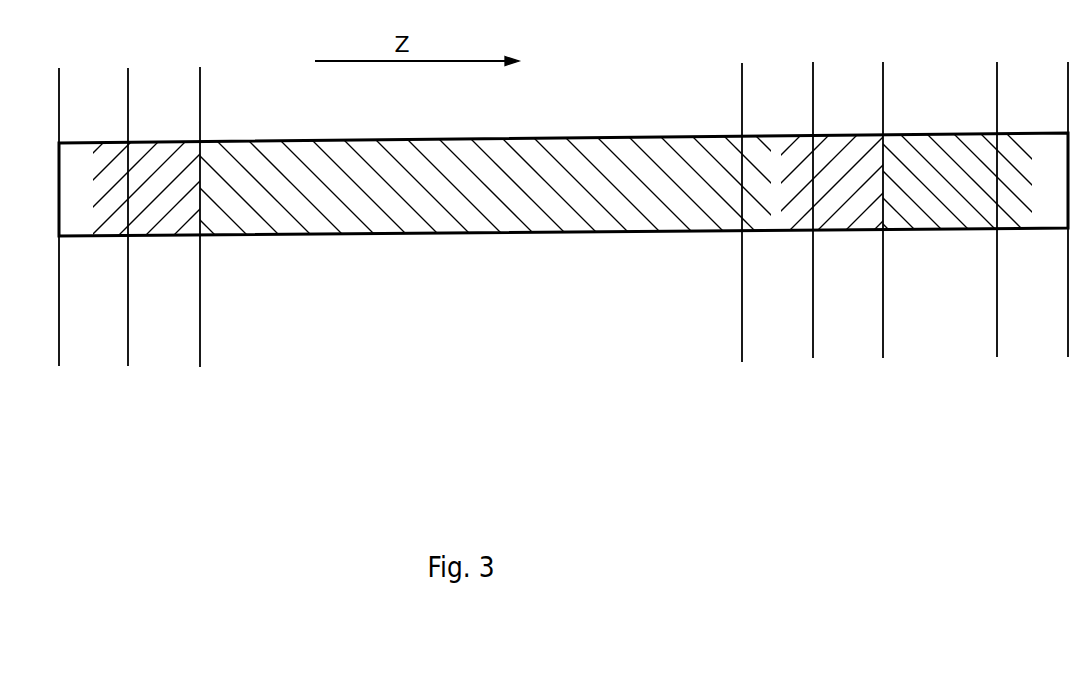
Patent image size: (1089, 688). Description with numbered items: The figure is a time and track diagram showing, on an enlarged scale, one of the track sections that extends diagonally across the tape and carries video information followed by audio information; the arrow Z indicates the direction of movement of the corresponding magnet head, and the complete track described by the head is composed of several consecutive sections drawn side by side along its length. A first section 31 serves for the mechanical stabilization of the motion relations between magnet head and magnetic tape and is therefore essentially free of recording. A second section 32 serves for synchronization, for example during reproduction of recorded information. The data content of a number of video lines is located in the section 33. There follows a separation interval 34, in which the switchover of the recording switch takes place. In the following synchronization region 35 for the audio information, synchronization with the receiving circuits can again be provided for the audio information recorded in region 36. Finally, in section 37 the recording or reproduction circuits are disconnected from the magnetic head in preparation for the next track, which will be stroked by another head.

The first section 31 is at (77, 149).
The second section 32 is at (162, 147).
The section 33 is at (487, 143).
The separation interval 34 is at (769, 138).
The synchronization region 35 is at (843, 138).
The region 36 is at (943, 137).
The section 37 is at (1032, 137).